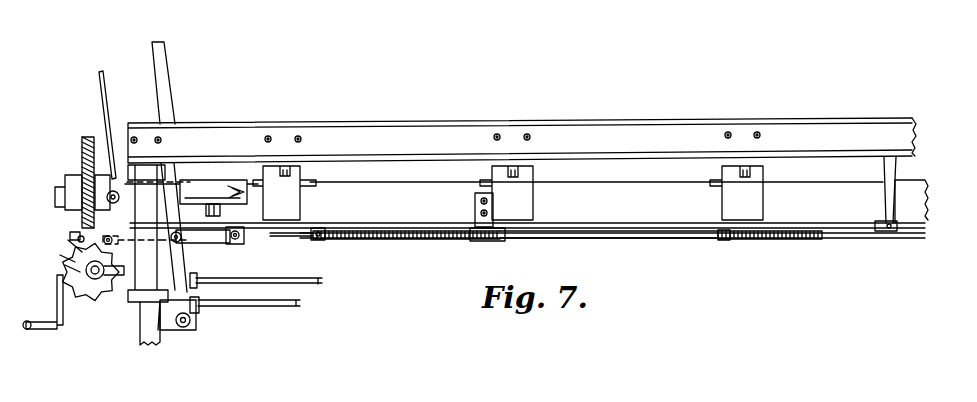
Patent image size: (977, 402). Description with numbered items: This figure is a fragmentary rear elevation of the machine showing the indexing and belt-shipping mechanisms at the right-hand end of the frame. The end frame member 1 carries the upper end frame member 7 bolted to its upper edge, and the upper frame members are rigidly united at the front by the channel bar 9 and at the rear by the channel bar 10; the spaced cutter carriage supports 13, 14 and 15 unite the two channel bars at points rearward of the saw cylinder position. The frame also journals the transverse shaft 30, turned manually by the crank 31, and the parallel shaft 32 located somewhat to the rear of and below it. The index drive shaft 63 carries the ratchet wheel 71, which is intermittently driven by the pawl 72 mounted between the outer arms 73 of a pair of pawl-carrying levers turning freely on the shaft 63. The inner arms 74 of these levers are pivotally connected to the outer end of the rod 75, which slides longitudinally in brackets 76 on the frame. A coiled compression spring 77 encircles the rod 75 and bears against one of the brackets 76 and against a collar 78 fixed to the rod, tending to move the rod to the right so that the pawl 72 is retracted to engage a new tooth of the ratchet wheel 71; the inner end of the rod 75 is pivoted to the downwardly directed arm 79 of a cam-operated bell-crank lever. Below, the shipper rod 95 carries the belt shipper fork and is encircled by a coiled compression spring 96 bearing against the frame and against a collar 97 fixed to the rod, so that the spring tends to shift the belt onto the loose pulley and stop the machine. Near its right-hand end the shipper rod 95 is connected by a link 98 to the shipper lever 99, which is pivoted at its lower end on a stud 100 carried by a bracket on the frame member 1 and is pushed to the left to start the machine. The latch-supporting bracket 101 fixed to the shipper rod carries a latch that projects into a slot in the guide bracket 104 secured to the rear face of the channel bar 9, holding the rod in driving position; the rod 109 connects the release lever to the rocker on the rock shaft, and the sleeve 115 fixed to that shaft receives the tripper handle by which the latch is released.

The end frame member 1 is at (141, 329).
The upper end frame member 7 is at (148, 233).
The front channel bar 9 is at (808, 198).
The rear channel bar 10 is at (636, 126).
The cutter carriage support 13 is at (726, 195).
The cutter carriage support 14 is at (530, 191).
The cutter carriage support 15 is at (296, 191).
The shaft 30 is at (320, 284).
The crank 31 is at (56, 303).
The shaft 32 is at (292, 307).
The shaft 63 is at (80, 300).
The ratchet wheel 71 is at (68, 270).
The pawl 72 is at (100, 236).
The outer arms of pawl-carrying levers 73 is at (70, 252).
The inner arms of pawl-carrying levers 74 is at (68, 262).
The rod 75 is at (632, 238).
The bracket 76 is at (501, 240).
The coiled compression spring 77 is at (394, 230).
The collar 78 is at (316, 240).
The downwardly directed arm 79 is at (900, 174).
The shipper rod 95 is at (276, 238).
The coiled compression spring 96 is at (776, 240).
The collar 97 is at (722, 242).
The link 98 is at (234, 244).
The shipper lever 99 is at (166, 76).
The stud 100 is at (189, 320).
The latch-supporting bracket 101 is at (210, 242).
The guide bracket 104 is at (224, 184).
The rod 109 is at (236, 184).
The sleeve 115 is at (95, 94).